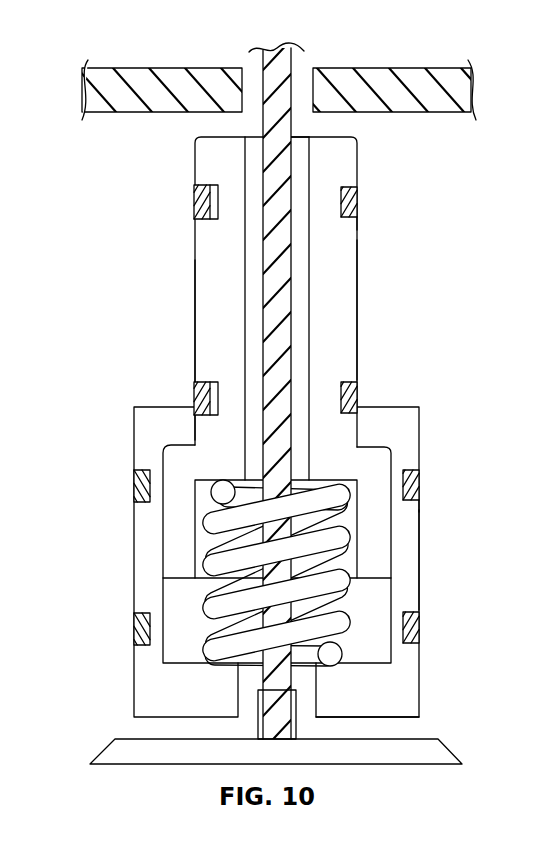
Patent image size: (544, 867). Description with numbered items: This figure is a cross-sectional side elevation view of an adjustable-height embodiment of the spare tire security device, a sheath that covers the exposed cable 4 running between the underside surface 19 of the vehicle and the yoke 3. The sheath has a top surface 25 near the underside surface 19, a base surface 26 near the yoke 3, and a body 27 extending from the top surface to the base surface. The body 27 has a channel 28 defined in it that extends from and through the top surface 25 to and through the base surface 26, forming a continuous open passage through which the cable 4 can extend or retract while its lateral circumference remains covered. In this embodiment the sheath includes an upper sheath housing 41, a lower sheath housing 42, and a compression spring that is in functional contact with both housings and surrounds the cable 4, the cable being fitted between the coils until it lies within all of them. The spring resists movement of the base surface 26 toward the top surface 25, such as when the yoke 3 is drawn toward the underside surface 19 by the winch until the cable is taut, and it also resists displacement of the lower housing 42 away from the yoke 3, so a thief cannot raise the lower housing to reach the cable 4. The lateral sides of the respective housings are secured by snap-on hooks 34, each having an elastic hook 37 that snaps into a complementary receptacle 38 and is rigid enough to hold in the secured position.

The yoke 3 is at (110, 767).
The cable 4 is at (263, 272).
The underside surface 19 is at (123, 113).
The top surface 25 is at (357, 137).
The base surface 26 is at (416, 717).
The body 27 is at (360, 291).
The channel 28 is at (297, 135).
The snap-on hooks 34 is at (360, 202).
The hook 37 is at (358, 213).
The receptacle 38 is at (194, 199).
The upper sheath housing 41 is at (194, 300).
The lower sheath housing 42 is at (134, 425).